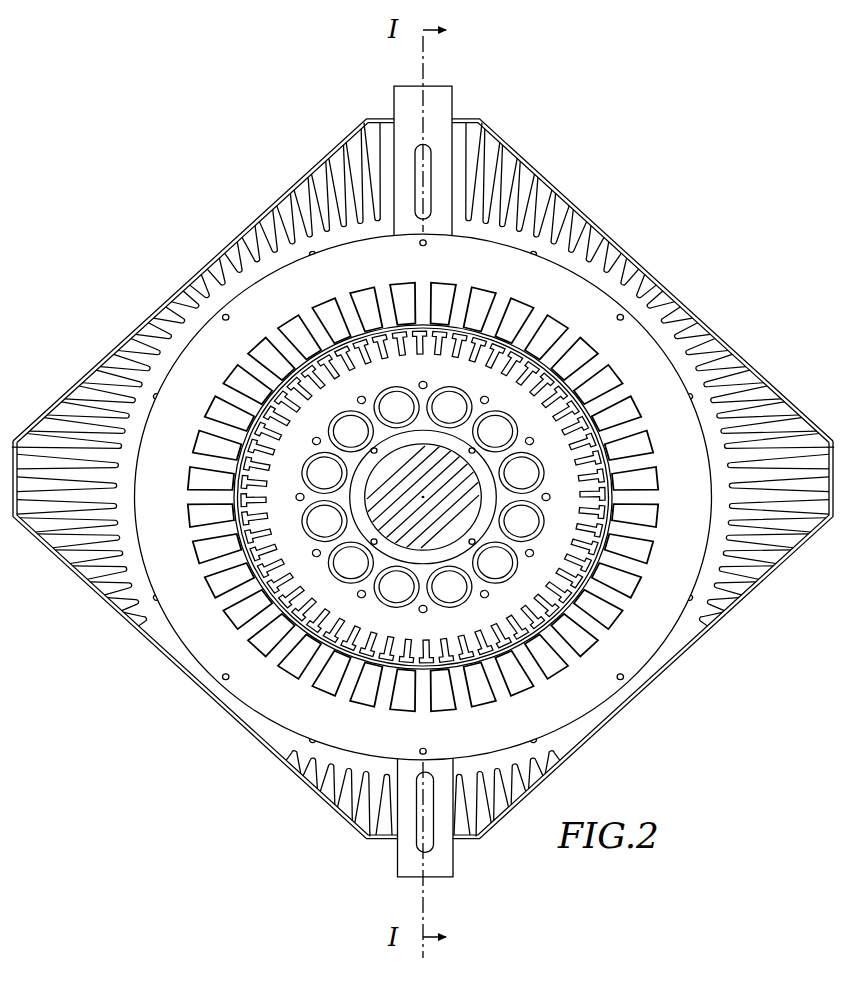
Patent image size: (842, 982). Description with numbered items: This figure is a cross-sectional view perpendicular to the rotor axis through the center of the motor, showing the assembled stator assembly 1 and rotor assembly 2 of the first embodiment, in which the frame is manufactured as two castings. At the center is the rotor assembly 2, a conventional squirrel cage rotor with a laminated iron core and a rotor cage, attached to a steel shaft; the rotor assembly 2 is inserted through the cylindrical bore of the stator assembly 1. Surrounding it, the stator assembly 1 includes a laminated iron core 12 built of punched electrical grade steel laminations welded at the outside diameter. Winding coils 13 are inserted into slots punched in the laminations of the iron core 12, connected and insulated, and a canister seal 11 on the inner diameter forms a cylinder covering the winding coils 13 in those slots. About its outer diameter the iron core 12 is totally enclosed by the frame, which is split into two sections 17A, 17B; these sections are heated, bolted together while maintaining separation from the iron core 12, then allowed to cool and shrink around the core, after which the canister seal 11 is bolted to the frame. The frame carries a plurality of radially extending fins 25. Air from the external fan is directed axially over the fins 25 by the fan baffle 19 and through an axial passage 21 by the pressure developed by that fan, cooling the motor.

The stator assembly 1 is at (423, 481).
The rotor assembly 2 is at (370, 494).
The canister seal 11 is at (553, 638).
The laminated iron core 12 is at (557, 278).
The winding coils 13 is at (480, 694).
The frame section 17A is at (665, 661).
The frame section 17B is at (195, 675).
The fan baffle 19 is at (259, 219).
The axial passage 21 is at (396, 403).
The fins 25 is at (484, 158).